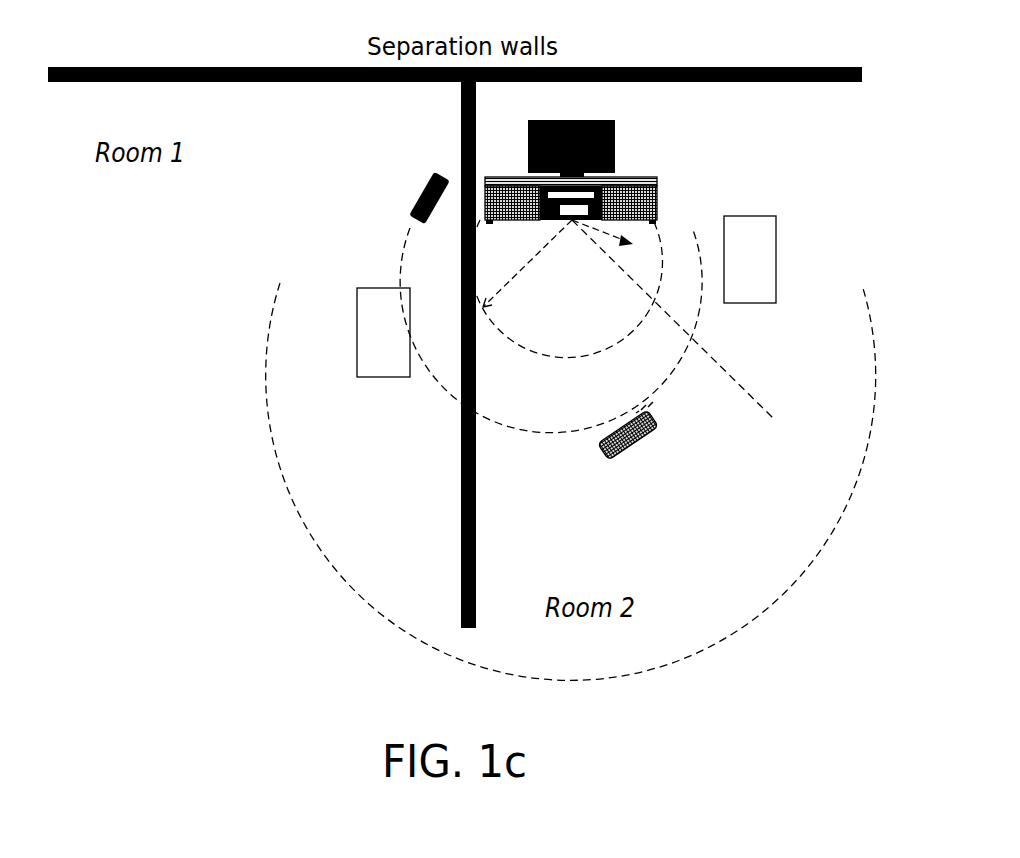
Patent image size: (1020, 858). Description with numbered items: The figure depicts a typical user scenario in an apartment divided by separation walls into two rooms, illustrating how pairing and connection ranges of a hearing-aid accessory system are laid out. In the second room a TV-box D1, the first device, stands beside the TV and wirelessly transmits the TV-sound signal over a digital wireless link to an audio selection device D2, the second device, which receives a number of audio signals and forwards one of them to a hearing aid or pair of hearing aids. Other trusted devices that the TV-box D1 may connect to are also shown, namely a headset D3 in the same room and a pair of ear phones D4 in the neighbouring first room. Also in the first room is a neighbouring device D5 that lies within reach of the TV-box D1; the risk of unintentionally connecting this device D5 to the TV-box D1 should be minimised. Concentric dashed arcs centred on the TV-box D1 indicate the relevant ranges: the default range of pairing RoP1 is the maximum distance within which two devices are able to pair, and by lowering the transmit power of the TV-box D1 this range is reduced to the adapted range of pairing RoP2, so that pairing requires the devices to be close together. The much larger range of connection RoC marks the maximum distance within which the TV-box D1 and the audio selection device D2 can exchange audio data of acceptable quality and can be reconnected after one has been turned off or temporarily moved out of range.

The TV-box D1 is at (528, 220).
The audio selection device D2 is at (607, 514).
The headset D3 is at (750, 259).
The pair of ear phones D4 is at (383, 332).
The neighbouring device D5 is at (409, 198).
The element TV is at (549, 132).
The default range of pairing RoP1 is at (515, 277).
The adapted range of pairing RoP2 is at (605, 231).
The range of connection RoC is at (730, 377).